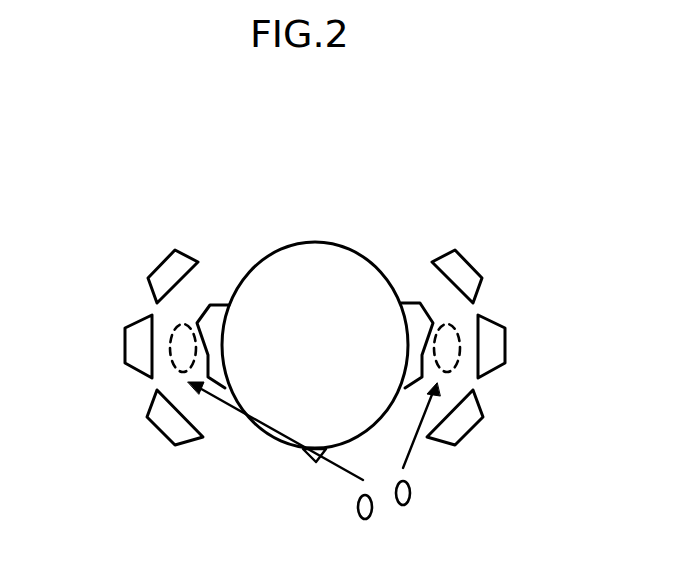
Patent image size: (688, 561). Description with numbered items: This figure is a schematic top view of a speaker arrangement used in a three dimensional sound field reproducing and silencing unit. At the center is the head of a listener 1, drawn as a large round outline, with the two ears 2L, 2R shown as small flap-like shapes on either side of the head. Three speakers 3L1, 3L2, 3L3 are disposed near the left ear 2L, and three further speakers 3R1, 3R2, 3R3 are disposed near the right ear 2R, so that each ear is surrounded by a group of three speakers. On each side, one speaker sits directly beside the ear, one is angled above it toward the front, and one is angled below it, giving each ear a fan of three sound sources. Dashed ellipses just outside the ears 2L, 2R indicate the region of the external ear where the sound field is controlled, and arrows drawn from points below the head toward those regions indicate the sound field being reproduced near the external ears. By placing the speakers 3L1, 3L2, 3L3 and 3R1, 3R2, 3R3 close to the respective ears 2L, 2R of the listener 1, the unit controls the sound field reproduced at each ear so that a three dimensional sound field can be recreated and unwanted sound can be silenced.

The listener 1 is at (320, 242).
The right ear 2R is at (218, 313).
The left ear 2L is at (417, 313).
The speaker 3R1 is at (155, 430).
The speaker 3R2 is at (125, 343).
The speaker 3R3 is at (160, 265).
The speaker 3L1 is at (474, 428).
The speaker 3L2 is at (505, 345).
The speaker 3L3 is at (470, 262).